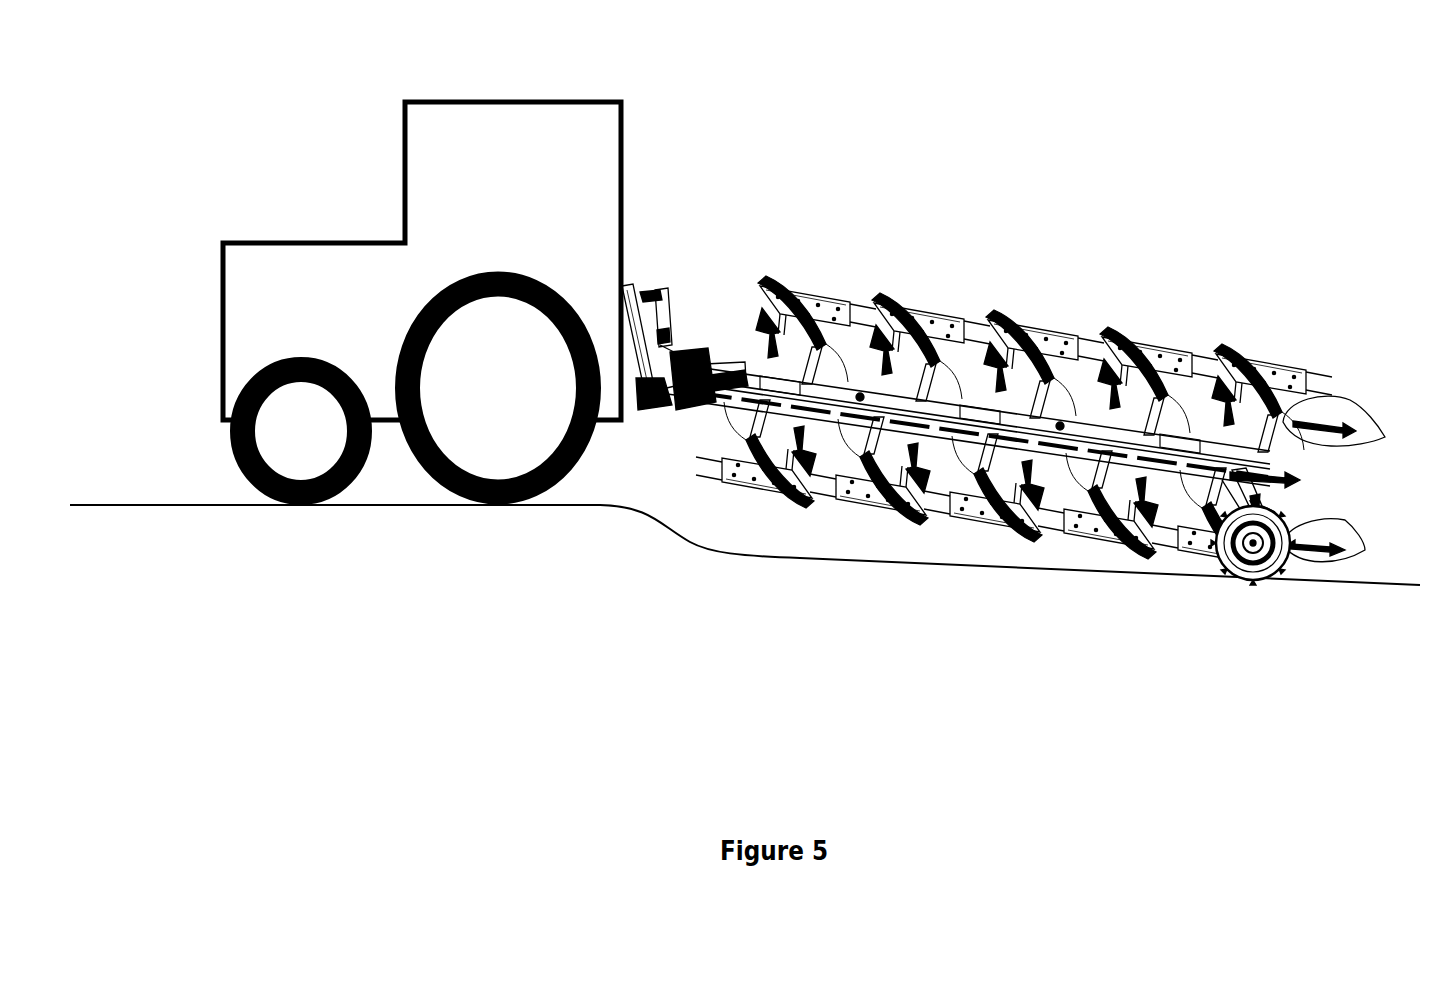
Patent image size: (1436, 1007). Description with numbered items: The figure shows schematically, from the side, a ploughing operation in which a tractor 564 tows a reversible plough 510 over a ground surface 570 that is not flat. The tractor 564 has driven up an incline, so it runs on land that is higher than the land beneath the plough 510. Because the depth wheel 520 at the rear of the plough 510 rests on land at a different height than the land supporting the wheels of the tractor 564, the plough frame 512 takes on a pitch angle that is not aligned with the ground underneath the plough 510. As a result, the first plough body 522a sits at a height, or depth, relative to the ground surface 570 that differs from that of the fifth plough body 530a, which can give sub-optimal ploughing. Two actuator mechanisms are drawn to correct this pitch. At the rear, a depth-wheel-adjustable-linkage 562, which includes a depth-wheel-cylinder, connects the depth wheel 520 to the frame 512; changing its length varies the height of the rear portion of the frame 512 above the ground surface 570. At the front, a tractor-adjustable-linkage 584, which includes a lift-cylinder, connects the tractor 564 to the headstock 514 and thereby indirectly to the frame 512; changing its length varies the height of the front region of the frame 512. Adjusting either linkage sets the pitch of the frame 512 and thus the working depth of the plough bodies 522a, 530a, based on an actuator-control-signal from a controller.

The tractor 564 is at (586, 102).
The tractor-adjustable-linkage 584 is at (640, 300).
The headstock 514 is at (678, 322).
The plough frame 512 is at (968, 330).
The reversible plough 510 is at (1051, 466).
The depth-wheel-adjustable-linkage 562 is at (1283, 483).
The ground surface 570 is at (118, 508).
The first plough body 522a is at (775, 500).
The fifth plough body 530a is at (1197, 567).
The depth wheel 520 is at (1278, 585).